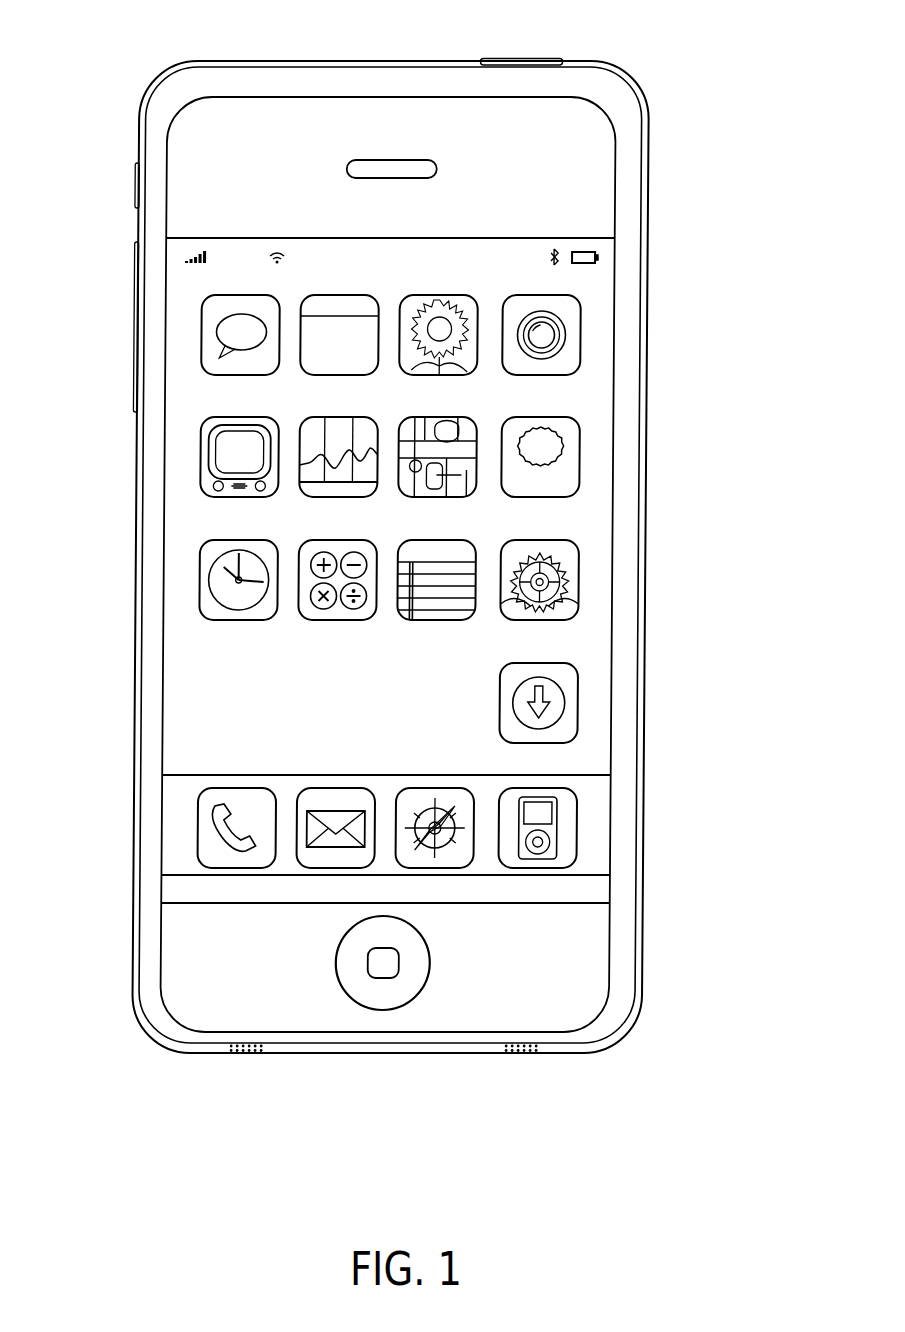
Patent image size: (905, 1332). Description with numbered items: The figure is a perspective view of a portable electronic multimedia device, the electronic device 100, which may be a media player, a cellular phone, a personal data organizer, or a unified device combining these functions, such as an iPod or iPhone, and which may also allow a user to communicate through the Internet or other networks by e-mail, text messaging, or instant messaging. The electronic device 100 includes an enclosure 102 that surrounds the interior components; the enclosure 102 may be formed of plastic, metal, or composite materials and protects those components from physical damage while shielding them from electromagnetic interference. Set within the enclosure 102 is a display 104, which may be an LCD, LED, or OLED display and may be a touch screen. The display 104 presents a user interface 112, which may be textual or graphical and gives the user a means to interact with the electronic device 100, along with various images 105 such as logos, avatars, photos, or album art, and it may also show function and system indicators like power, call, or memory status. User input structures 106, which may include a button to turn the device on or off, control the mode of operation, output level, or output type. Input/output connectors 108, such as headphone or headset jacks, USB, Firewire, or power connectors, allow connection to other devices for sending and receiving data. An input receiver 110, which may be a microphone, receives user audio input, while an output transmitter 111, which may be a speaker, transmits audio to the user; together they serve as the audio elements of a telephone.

The electronic device 100 is at (253, 40).
The enclosure 102 is at (651, 225).
The display 104 is at (598, 553).
The images 105 is at (499, 715).
The user input structures 106 is at (533, 58).
The input/output connectors 108 is at (373, 1056).
The input receiver 110 is at (243, 1058).
The output transmitter 111 is at (417, 148).
The user interface 112 is at (597, 359).